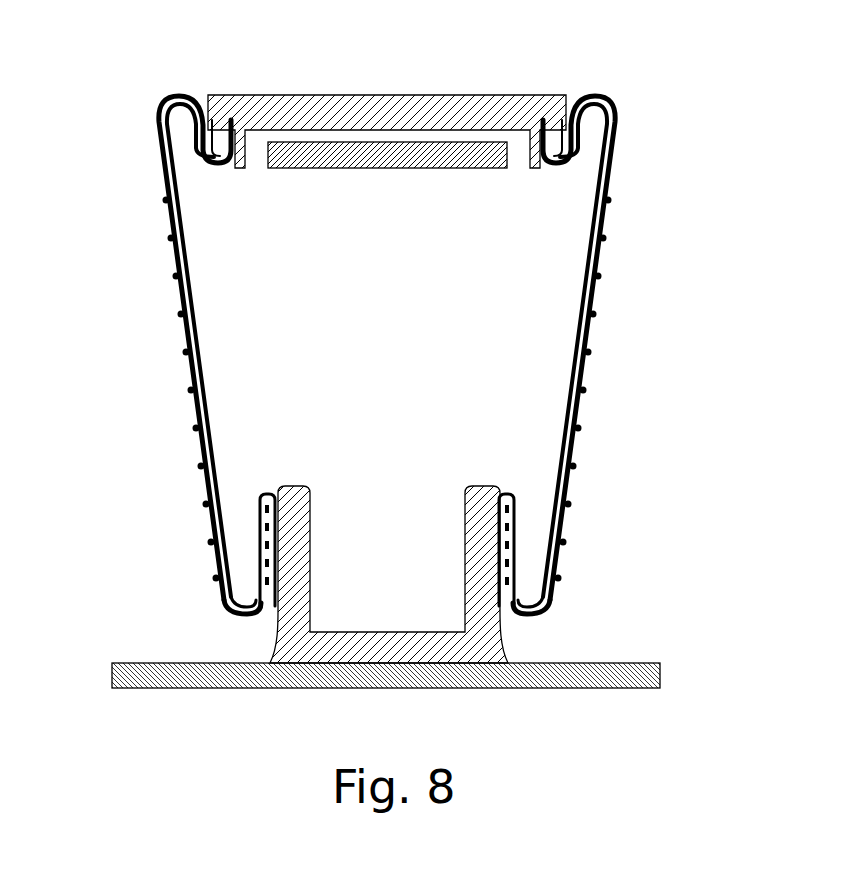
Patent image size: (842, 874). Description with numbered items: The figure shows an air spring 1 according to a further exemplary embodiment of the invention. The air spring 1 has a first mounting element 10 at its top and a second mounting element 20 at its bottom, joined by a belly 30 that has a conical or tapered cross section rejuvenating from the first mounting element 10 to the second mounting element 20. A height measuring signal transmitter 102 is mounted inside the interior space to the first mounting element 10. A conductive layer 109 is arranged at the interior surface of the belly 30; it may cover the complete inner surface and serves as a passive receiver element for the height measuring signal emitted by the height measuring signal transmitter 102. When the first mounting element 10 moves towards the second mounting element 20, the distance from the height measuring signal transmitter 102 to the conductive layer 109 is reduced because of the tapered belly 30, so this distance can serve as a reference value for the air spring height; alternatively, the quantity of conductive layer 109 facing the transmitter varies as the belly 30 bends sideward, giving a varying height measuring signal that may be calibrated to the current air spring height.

The air spring 1 is at (140, 318).
The first mounting element 10 is at (512, 105).
The height measuring signal transmitter 102 is at (480, 160).
The belly 30 is at (587, 348).
The conductive layer 109 is at (187, 347).
The second mounting element 20 is at (482, 640).